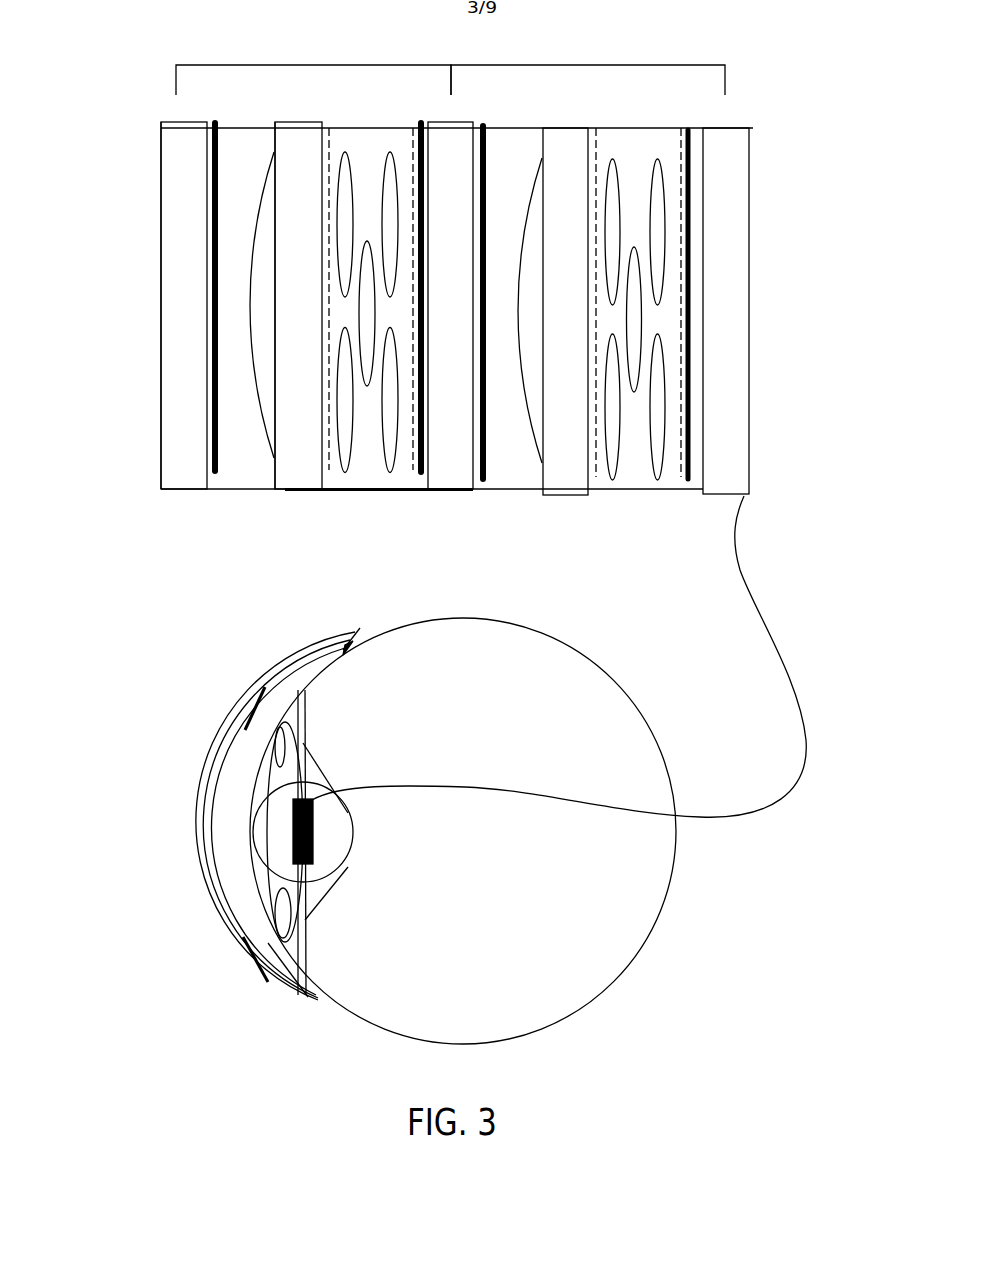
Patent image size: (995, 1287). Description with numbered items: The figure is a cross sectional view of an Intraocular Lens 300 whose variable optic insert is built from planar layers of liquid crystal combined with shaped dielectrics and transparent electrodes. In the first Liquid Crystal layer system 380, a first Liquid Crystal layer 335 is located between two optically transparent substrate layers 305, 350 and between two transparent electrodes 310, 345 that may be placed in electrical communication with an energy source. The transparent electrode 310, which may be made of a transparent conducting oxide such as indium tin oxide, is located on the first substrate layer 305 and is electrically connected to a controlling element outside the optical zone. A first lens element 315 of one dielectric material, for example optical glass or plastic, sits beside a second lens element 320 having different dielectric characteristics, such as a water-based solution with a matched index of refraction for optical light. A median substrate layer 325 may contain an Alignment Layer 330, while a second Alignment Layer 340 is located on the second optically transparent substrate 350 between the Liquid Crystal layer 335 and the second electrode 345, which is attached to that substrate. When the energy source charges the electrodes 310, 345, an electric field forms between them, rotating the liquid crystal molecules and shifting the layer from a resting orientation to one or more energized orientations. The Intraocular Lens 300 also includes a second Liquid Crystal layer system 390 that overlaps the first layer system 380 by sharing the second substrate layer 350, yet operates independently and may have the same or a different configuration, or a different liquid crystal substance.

The Intraocular Lens 300 is at (858, 318).
The first optically transparent substrate layer 305 is at (125, 305).
The transparent electrode 310 is at (129, 297).
The first lens element 315 is at (158, 305).
The second lens element 320 is at (159, 305).
The median substrate layer 325 is at (182, 307).
The Alignment Layer 330 is at (221, 352).
The Liquid Crystal layer 335 is at (300, 383).
The second Alignment Layer 340 is at (365, 379).
The second electrode 345 is at (510, 369).
The second optically transparent substrate layer 350 is at (466, 347).
The first Liquid Crystal layer system 380 is at (313, 65).
The second Liquid Crystal layer system 390 is at (588, 65).